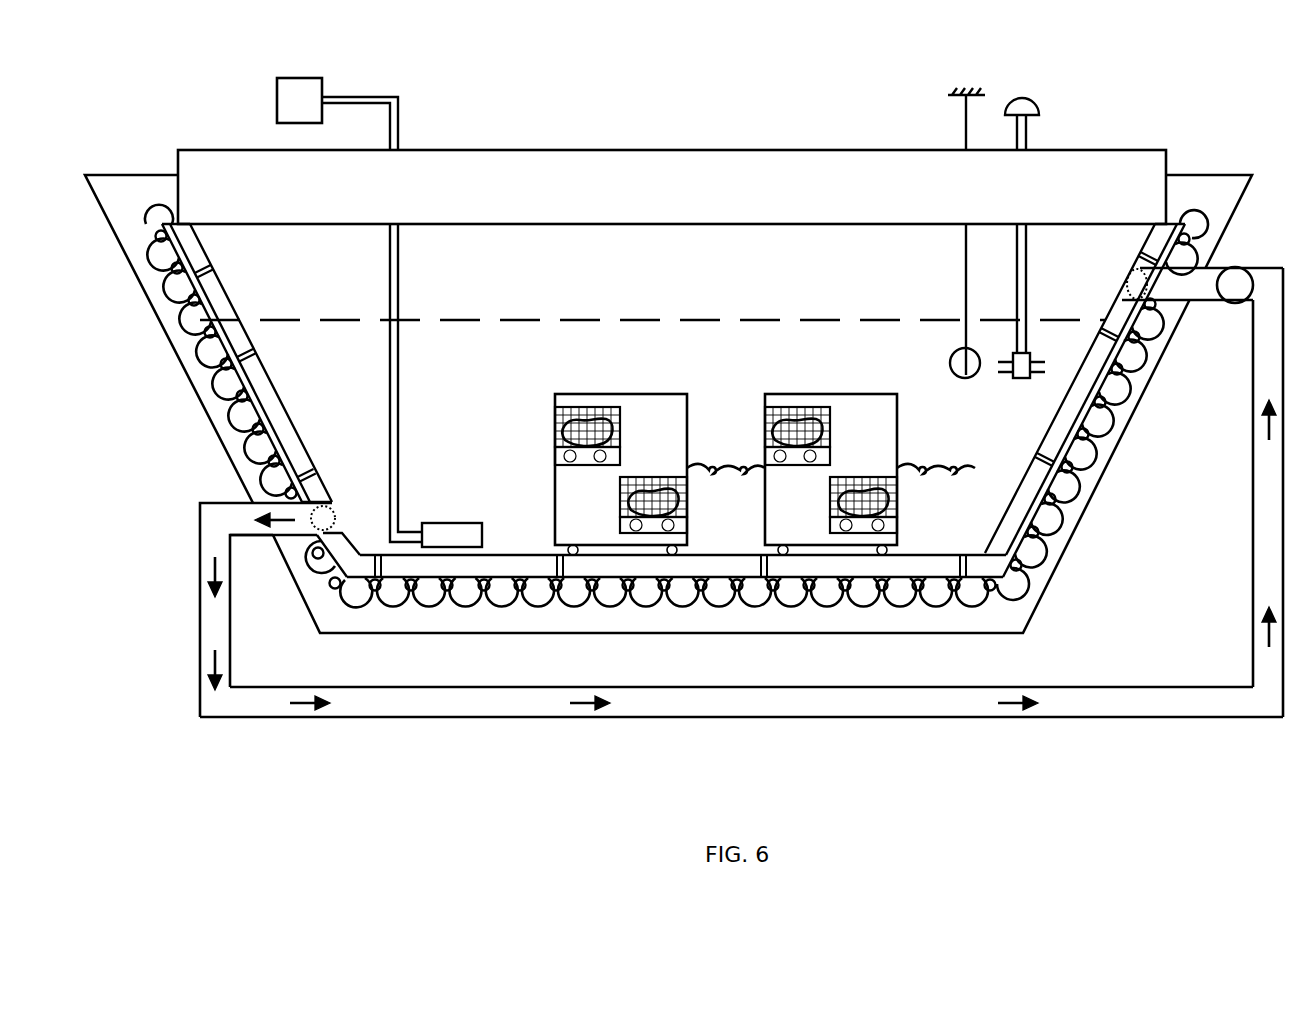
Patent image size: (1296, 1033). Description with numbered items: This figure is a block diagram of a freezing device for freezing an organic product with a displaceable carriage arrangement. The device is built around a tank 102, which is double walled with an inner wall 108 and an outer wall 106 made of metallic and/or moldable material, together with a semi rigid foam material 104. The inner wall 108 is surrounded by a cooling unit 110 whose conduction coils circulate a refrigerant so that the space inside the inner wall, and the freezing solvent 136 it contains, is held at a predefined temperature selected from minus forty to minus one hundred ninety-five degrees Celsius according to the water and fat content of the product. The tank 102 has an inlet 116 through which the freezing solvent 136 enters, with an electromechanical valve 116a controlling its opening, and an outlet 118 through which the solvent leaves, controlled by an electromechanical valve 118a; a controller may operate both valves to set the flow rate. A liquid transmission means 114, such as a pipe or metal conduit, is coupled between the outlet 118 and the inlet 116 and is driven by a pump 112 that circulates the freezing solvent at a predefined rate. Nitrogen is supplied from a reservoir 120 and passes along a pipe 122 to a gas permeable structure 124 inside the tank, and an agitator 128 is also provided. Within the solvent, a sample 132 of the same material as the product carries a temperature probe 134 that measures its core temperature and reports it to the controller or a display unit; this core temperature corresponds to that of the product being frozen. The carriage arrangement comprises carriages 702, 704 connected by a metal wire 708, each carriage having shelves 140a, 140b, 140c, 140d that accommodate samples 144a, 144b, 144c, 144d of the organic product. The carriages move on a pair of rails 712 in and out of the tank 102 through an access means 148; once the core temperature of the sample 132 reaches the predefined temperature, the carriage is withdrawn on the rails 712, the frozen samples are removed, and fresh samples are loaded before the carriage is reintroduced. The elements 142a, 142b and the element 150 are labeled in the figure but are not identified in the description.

The tank 102 is at (1163, 370).
The semi rigid foam material 104 is at (1122, 415).
The outer wall 106 is at (1102, 487).
The inner wall 108 is at (1057, 487).
The cooling unit 110 is at (1040, 560).
The pump 112 is at (1238, 277).
The liquid transmission means 114 is at (817, 686).
The inlet 116 is at (1118, 284).
The electromechanical valve 116a is at (1127, 278).
The outlet 118 is at (334, 500).
The electromechanical valve 118a is at (385, 470).
The reservoir 120 is at (275, 99).
The pipe 122 is at (402, 408).
The gas permeable structure 124 is at (456, 522).
The agitator 128 is at (1041, 100).
The sample 132 is at (965, 382).
The temperature probe 134 is at (951, 358).
The freezing solvent 136 is at (750, 336).
The shelf 140a is at (612, 456).
The shelf 140b is at (620, 526).
The shelf 140c is at (780, 460).
The shelf 140d is at (837, 526).
The roller 142a is at (565, 458).
The roller 142b is at (602, 460).
The sample of organic product 144a is at (612, 426).
The sample of organic product 144b is at (688, 508).
The sample of organic product 144c is at (825, 426).
The sample of organic product 144d is at (899, 496).
The access means 148 is at (673, 148).
The recirculation conduit 150 is at (200, 662).
The carriage 702 is at (616, 447).
The carriage 704 is at (867, 443).
The metal wire 708 is at (727, 467).
The pair of rails 712 is at (218, 310).